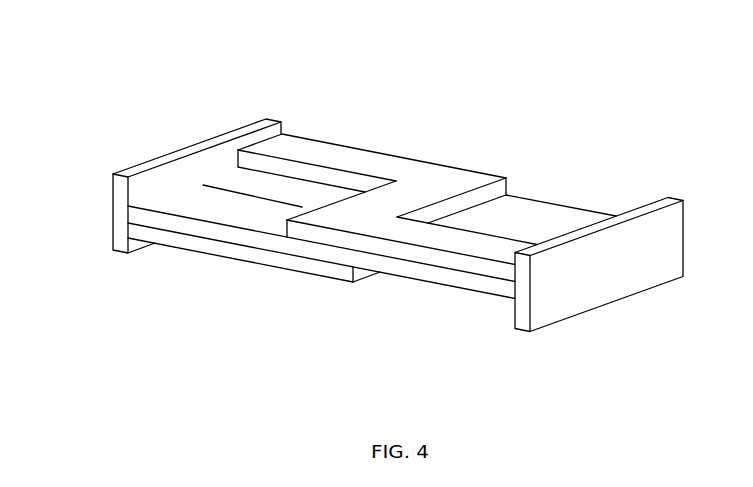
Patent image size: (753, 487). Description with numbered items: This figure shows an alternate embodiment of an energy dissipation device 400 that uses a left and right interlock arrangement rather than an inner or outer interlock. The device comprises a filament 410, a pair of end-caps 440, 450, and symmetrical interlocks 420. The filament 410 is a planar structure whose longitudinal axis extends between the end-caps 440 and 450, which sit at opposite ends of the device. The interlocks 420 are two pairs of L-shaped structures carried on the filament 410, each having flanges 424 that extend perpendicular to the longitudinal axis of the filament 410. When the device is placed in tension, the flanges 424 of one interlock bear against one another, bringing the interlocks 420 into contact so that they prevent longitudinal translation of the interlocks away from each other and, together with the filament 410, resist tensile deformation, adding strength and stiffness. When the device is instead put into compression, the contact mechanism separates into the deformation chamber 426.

The energy dissipation device 400 is at (614, 70).
The filament 410 is at (174, 206).
The symmetrical interlocks 420 is at (338, 157).
The flanges 424 is at (367, 199).
The deformation chamber 426 is at (253, 196).
The end-cap 440 is at (117, 247).
The end-cap 450 is at (572, 285).